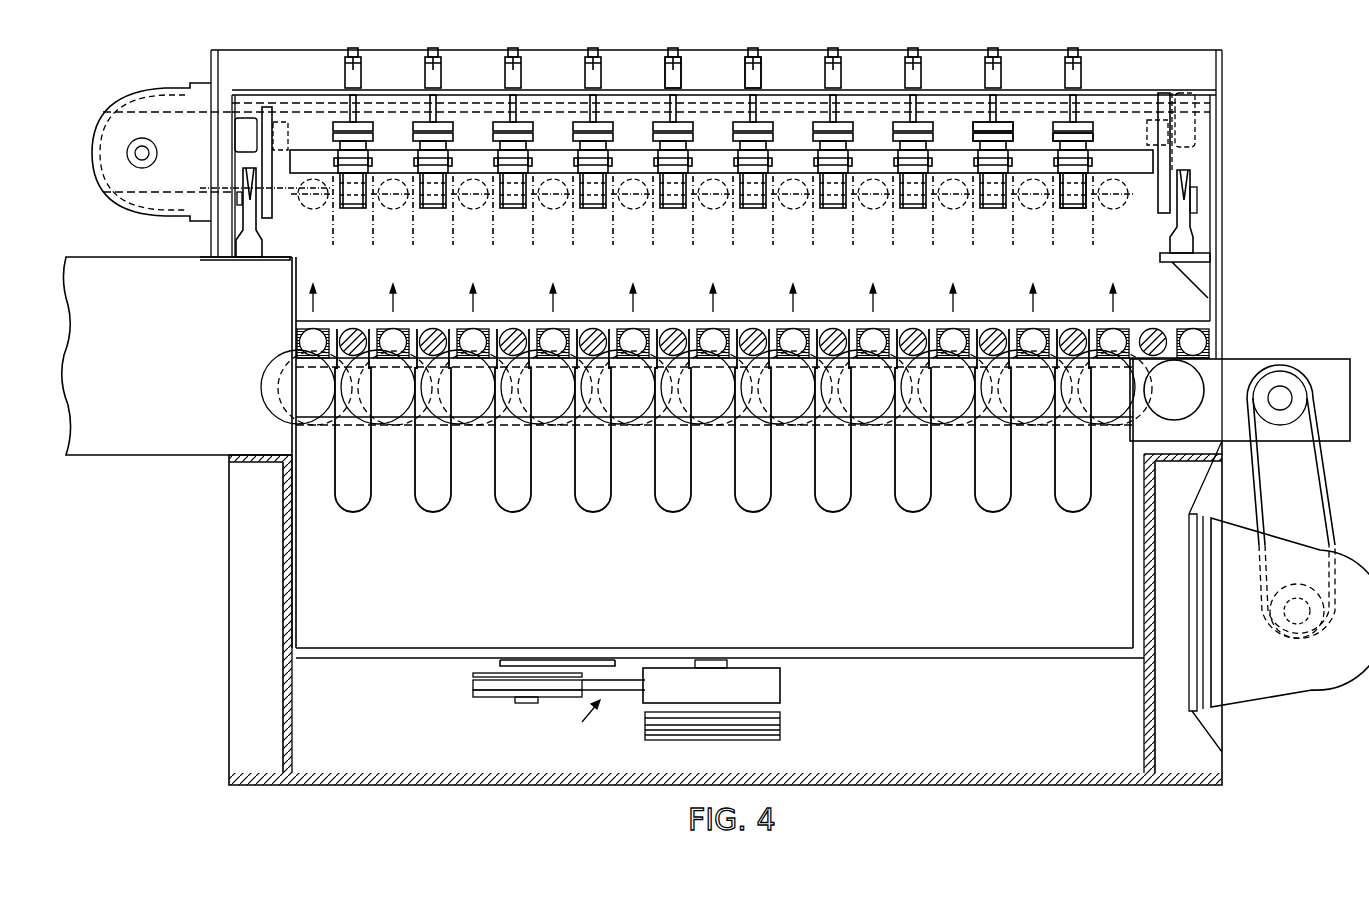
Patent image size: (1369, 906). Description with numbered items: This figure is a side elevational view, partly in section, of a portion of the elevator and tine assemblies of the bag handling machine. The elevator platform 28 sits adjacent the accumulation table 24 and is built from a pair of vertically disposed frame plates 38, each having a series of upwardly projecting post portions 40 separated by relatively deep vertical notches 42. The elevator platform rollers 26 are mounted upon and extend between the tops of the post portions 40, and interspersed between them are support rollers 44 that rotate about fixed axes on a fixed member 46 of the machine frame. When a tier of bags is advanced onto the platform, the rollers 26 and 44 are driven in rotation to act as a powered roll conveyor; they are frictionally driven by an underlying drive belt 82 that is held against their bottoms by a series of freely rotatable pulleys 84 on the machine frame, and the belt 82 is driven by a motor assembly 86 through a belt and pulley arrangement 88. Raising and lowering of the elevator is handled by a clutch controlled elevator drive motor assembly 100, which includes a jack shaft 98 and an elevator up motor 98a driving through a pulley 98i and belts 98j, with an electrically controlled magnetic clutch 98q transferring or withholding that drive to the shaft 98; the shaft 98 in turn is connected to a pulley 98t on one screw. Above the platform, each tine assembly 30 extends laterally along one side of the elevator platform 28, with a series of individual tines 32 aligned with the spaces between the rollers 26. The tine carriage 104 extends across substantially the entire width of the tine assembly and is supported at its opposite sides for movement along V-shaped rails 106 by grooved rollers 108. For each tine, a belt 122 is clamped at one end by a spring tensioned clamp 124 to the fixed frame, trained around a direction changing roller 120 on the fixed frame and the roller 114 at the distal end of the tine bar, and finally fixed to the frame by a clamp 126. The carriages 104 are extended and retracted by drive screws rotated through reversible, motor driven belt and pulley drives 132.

The accumulation table 24 is at (133, 437).
The elevator platform rollers 26 is at (399, 211).
The elevator platform 28 is at (297, 515).
The tine assembly 30 is at (862, 49).
The tine 32 is at (433, 215).
The frame plates 38 is at (374, 557).
The post portions 40 is at (403, 444).
The vertical notches 42 is at (358, 508).
The support rollers 44 is at (434, 336).
The fixed member 46 is at (1054, 331).
The drive belt 82 is at (1225, 362).
The pulleys 84 is at (1162, 325).
The motor assembly 86 is at (1268, 682).
The belt and pulley arrangement 88 is at (1318, 370).
The jack shaft 98 is at (604, 713).
The elevator up motor 98a is at (455, 662).
The pulley 98i is at (500, 700).
The belts 98j is at (475, 683).
The magnetic clutch 98q is at (780, 690).
The pulley 98t is at (752, 741).
The elevator drive motor assembly 100 is at (574, 722).
The tine carriage 104 is at (300, 130).
The V-shaped rails 106 is at (262, 248).
The grooved rollers 108 is at (245, 222).
The roller 114 is at (1062, 212).
The direction changing roller 120 is at (721, 162).
The belt 122 is at (1080, 143).
The spring tensioned clamp 124 is at (1050, 120).
The clamp 126 is at (745, 82).
The belt and pulley drive 132 is at (184, 102).